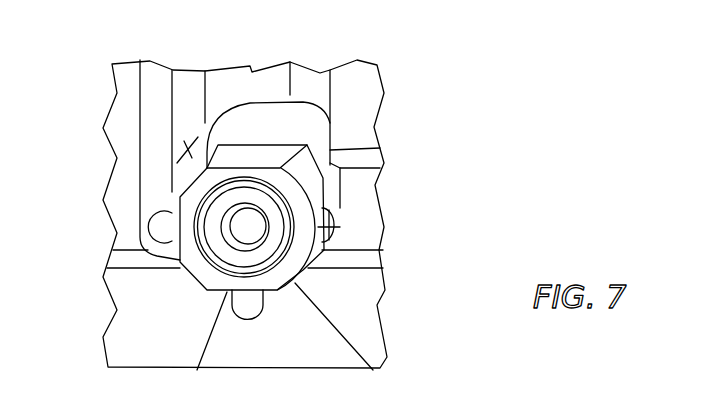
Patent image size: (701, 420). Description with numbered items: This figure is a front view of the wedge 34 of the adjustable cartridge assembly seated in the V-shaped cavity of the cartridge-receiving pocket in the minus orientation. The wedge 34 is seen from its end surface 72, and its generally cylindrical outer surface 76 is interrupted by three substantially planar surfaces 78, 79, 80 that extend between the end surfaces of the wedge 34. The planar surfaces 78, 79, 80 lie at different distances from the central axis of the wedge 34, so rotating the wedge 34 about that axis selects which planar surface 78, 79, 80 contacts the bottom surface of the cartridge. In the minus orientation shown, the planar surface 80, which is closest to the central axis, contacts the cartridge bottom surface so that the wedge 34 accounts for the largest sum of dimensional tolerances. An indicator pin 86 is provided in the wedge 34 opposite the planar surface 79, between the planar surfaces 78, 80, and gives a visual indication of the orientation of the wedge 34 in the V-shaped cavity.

The wedge 34 is at (313, 280).
The end surface 72 is at (197, 258).
The generally cylindrical outer surface 76 is at (196, 170).
The planar surface 78 is at (200, 365).
The planar surface 79 is at (148, 220).
The planar surface 80 is at (258, 163).
The indicator pin 86 is at (340, 227).